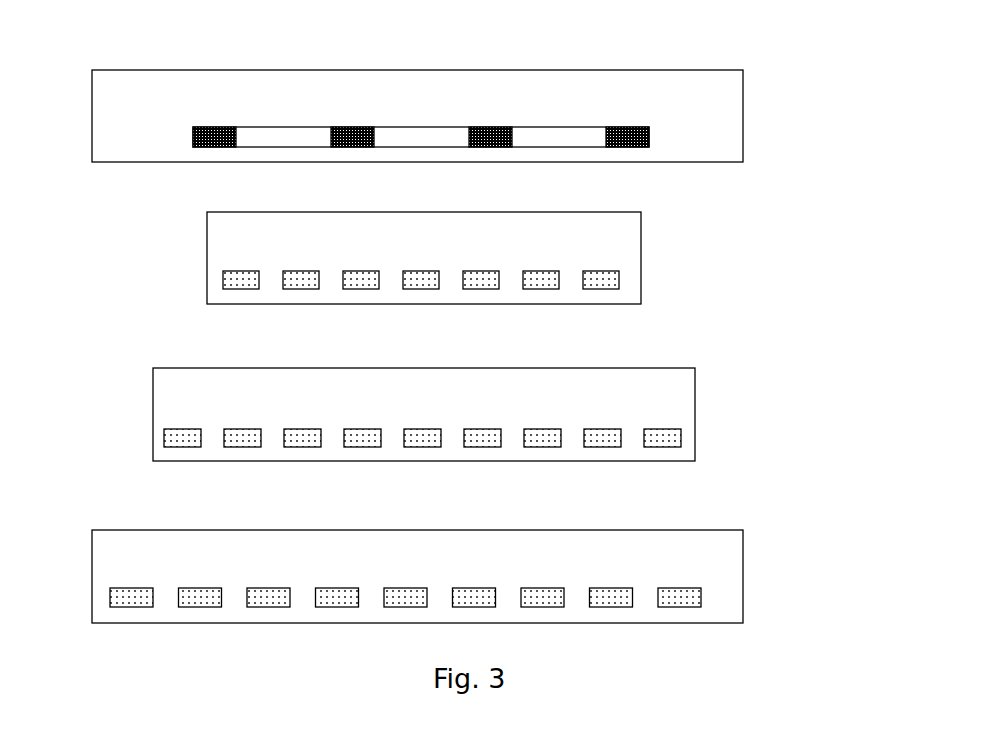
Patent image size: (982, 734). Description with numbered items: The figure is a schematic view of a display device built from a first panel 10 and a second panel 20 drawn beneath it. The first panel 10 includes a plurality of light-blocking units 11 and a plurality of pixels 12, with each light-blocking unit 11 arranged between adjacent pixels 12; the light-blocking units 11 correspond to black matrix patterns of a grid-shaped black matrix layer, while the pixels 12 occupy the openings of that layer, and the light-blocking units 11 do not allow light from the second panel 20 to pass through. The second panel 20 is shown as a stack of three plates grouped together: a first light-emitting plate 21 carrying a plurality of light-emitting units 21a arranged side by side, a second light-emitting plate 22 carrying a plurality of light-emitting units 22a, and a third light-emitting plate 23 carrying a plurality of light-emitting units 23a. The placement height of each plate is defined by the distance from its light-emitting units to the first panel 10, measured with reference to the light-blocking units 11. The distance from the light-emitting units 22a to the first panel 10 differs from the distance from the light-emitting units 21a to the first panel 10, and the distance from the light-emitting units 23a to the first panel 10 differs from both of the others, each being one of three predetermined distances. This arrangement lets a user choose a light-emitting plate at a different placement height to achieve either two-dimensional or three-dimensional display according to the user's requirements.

The first panel 10 is at (475, 85).
The light-blocking units 11 is at (497, 131).
The pixels 12 is at (292, 133).
The second panel 20 is at (792, 270).
The first light-emitting plate 21 is at (425, 258).
The light-emitting units 21a is at (226, 278).
The second light-emitting plate 22 is at (426, 408).
The light-emitting units 22a is at (243, 428).
The third light-emitting plate 23 is at (426, 552).
The light-emitting units 23a is at (205, 587).